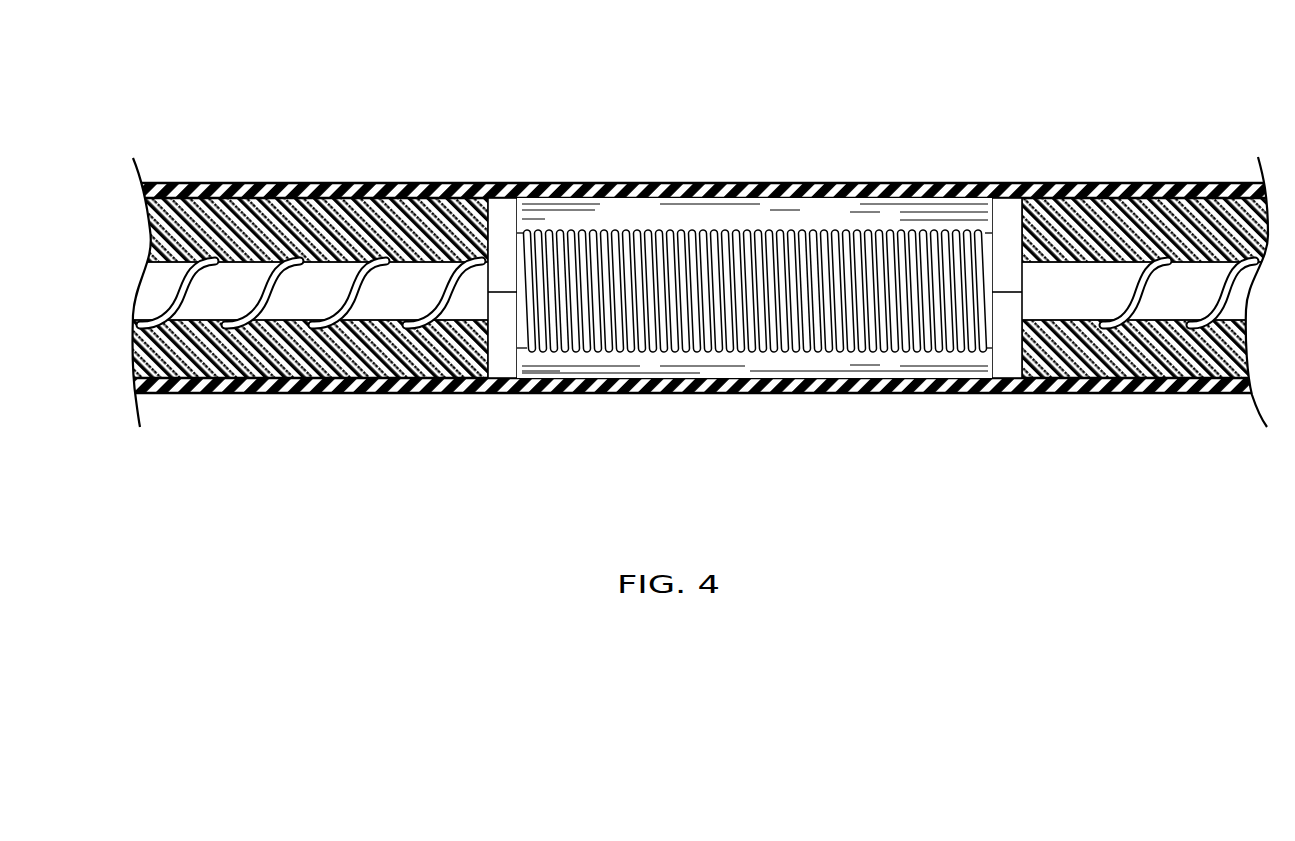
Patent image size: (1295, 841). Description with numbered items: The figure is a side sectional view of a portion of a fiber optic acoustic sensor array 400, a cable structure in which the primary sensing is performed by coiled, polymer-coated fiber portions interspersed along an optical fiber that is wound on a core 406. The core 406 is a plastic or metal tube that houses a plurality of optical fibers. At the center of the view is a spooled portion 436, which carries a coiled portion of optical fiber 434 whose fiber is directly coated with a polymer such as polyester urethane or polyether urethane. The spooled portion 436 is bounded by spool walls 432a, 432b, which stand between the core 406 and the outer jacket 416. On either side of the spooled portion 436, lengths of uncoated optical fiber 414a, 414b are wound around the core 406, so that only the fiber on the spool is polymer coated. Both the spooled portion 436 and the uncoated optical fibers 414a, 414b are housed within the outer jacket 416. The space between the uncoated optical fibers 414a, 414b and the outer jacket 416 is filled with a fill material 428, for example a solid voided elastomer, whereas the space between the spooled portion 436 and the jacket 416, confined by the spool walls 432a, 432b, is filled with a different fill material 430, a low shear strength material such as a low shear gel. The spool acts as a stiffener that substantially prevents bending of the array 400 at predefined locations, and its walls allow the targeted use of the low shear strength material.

The fiber optic acoustic sensor array 400 is at (657, 150).
The core 406 is at (155, 290).
The uncoated optical fiber 414a is at (309, 288).
The uncoated optical fiber 414b is at (1146, 288).
The outer jacket 416 is at (700, 190).
The fill material 428 is at (700, 385).
The fill material 430 is at (795, 372).
The spool wall 432a is at (498, 372).
The spool wall 432b is at (1005, 372).
The coiled portion of optical fiber 434 is at (716, 229).
The spooled portion 436 is at (793, 227).